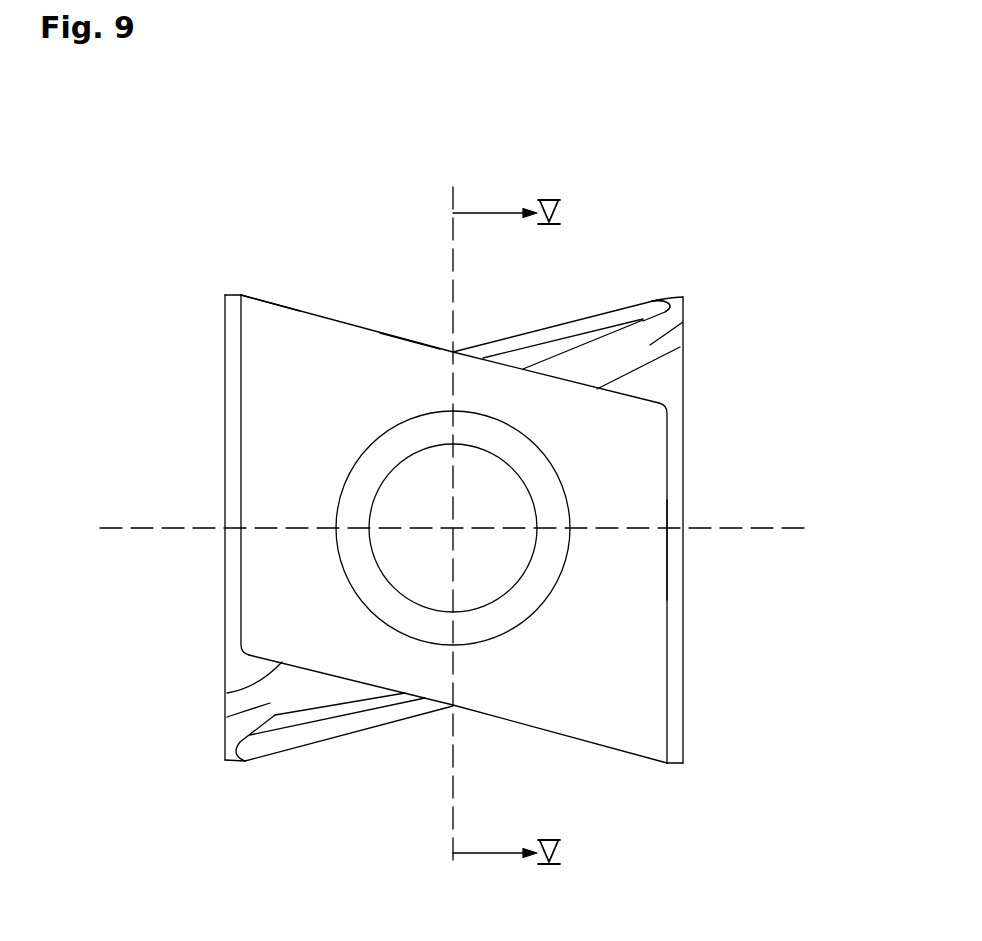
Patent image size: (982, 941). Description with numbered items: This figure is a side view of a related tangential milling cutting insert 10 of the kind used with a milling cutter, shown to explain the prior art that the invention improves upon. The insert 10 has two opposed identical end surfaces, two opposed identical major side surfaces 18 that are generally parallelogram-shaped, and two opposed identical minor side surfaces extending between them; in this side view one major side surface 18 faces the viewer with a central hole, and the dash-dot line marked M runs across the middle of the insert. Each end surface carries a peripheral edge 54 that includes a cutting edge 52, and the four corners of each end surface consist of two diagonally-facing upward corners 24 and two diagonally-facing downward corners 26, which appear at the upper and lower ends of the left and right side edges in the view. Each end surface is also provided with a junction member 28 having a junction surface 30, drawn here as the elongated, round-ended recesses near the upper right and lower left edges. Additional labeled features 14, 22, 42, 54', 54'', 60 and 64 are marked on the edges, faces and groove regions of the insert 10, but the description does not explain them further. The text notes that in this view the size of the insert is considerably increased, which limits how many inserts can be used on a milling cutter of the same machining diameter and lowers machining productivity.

The tangential milling cutting insert 10 is at (134, 198).
The bottom surface 14 is at (647, 593).
The major side surface 18 is at (265, 457).
The end surface 22 is at (232, 385).
The upward corner 24 is at (194, 294).
The downward corner 26 is at (695, 390).
The junction member 28 is at (533, 366).
The junction surface 30 is at (570, 355).
The cutting edge 42 is at (350, 323).
The cutting edge 52 is at (259, 282).
The peripheral edge 54 is at (452, 515).
The first cutting edge section 54' is at (451, 523).
The second cutting edge section 54'' is at (456, 524).
The rounded groove end 60 is at (615, 313).
The land 64 is at (683, 322).
The median plane M is at (753, 528).